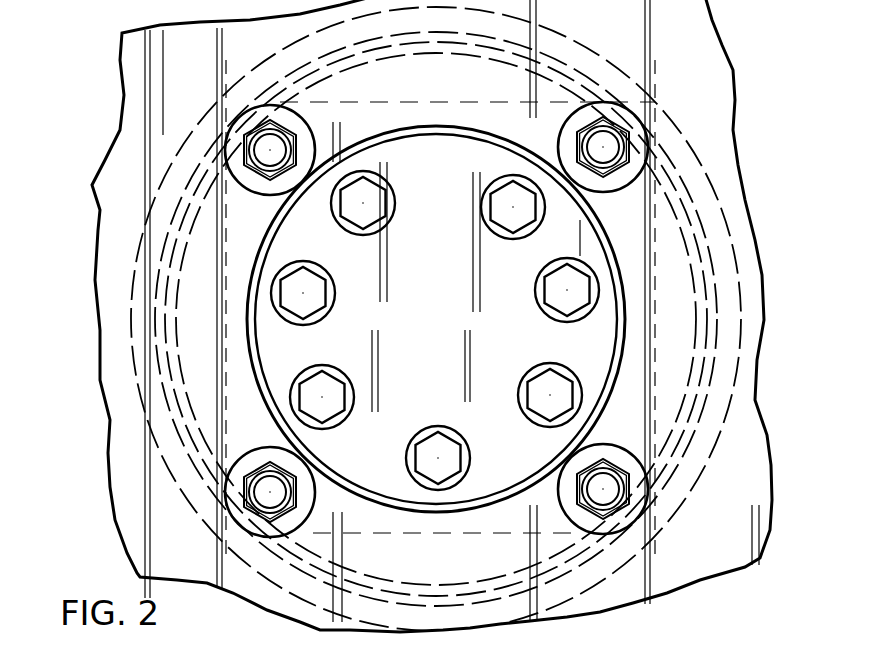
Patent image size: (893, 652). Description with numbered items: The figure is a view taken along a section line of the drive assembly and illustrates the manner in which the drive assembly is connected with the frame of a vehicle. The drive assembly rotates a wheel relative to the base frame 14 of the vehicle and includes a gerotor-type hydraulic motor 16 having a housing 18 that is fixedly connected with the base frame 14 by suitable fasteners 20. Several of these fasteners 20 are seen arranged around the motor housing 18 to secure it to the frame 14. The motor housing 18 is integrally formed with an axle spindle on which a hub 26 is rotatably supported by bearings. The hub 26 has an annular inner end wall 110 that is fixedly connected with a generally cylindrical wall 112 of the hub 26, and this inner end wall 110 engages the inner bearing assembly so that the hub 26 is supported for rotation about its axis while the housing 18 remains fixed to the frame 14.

The base frame 14 is at (660, 244).
The hydraulic motor 16 is at (225, 337).
The housing 18 is at (600, 333).
The fasteners 20 is at (253, 137).
The hub 26 is at (655, 80).
The annular inner end wall 110 is at (670, 402).
The cylindrical wall 112 is at (720, 334).